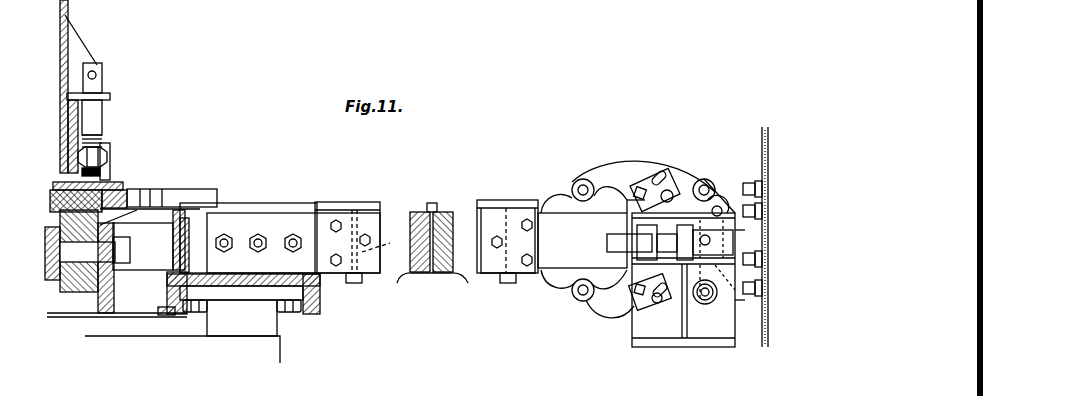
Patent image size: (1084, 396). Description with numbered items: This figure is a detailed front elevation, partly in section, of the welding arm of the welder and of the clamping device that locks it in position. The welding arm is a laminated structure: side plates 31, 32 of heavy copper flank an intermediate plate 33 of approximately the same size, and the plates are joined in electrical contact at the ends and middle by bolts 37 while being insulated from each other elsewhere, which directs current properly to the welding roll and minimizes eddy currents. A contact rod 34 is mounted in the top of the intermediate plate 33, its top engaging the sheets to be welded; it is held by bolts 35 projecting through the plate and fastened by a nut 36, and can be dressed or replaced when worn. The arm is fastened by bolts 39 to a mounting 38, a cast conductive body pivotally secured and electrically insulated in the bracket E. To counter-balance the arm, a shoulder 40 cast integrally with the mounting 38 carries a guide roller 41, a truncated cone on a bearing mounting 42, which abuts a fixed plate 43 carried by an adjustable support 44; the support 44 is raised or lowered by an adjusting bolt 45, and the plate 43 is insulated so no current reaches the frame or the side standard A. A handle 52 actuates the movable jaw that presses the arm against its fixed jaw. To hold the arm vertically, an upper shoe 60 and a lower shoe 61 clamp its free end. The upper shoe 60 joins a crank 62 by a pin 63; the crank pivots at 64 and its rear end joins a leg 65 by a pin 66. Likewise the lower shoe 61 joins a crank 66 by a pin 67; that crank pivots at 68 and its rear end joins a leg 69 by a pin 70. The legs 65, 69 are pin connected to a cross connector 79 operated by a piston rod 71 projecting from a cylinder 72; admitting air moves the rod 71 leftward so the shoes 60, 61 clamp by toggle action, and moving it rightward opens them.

The side plate 31 is at (400, 273).
The side plate 32 is at (509, 280).
The intermediate plate 33 is at (428, 211).
The contact rod 34 is at (355, 205).
The bolts 35 is at (381, 251).
The nut 36 is at (356, 278).
The bolts 37 is at (348, 243).
The mounting 38 is at (253, 210).
The bolts 39 is at (286, 248).
The shoulder 40 is at (150, 239).
The guide roller 41 is at (83, 288).
The bearing mounting 42 is at (80, 251).
The fixed plate 43 is at (118, 183).
The adjustable support 44 is at (106, 172).
The adjusting bolt 45 is at (98, 110).
The handle 52 is at (671, 280).
The upper shoe 60 is at (550, 196).
The lower shoe 61 is at (558, 284).
The crank 62 is at (620, 170).
The pin 63 is at (581, 178).
The pivot 64 is at (655, 178).
The leg 65 is at (719, 200).
The pin 66 is at (706, 180).
The pin 67 is at (588, 300).
The pivot 68 is at (647, 300).
The leg 69 is at (733, 285).
The pin 70 is at (705, 300).
The piston rod 71 is at (748, 237).
The cylinder 72 is at (758, 254).
The cross connector 79 is at (735, 252).
The side standard A is at (63, 22).
The bracket E is at (202, 319).